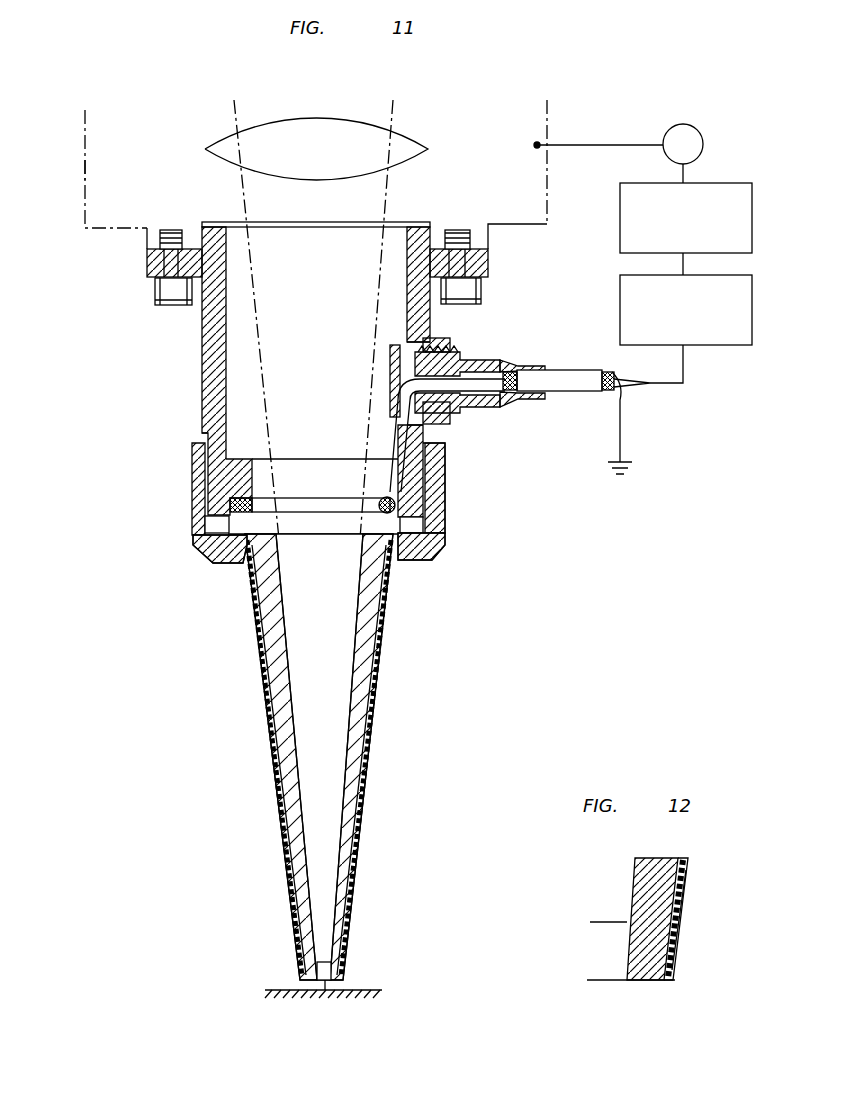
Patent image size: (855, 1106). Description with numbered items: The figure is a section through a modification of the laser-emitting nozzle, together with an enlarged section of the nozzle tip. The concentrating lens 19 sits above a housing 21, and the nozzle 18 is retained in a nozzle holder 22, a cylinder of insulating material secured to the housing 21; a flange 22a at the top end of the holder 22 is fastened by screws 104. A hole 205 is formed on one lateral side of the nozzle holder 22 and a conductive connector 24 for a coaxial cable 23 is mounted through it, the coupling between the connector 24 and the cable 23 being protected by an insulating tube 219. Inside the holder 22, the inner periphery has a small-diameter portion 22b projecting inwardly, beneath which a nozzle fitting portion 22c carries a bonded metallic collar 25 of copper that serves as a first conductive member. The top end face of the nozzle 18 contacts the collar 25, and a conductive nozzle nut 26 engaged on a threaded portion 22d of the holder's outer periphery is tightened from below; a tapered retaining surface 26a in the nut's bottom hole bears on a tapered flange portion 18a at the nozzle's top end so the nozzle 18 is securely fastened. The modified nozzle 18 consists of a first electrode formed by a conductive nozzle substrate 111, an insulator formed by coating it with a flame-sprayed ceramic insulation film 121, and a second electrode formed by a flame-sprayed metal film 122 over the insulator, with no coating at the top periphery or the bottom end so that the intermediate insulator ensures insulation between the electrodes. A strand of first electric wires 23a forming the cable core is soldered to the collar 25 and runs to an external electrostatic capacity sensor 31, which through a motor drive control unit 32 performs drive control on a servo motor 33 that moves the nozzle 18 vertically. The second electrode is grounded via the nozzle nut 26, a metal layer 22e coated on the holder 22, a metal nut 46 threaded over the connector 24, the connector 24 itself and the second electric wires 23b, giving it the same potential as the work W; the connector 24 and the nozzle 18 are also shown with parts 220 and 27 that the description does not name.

In FIG. 11, the concentrating lens 19 is at (292, 117).
In FIG. 11, the housing 21 is at (86, 172).
In FIG. 11, the nozzle holder 22 is at (208, 347).
In FIG. 11, the flange 22a is at (150, 266).
In FIG. 11, the small-diameter portion 22b is at (211, 465).
In FIG. 11, the nozzle fitting portion 22c is at (208, 530).
In FIG. 11, the threaded portion 22d is at (192, 487).
In FIG. 11, the metal layer 22e is at (428, 432).
In FIG. 11, the screws 104 is at (153, 295).
In FIG. 11, the servo motor 33 is at (667, 128).
In FIG. 11, the motor drive control unit 32 is at (620, 210).
In FIG. 11, the electrostatic capacity sensor 31 is at (620, 300).
In FIG. 11, the hole 205 is at (395, 348).
In FIG. 11, the flange plate 220 is at (392, 378).
In FIG. 11, the connector 24 is at (467, 355).
In FIG. 11, the metal nut 46 is at (452, 421).
In FIG. 11, the coaxial cable 23 is at (533, 378).
In FIG. 11, the second electric wires 23b is at (605, 370).
In FIG. 11, the first electric wires 23a is at (386, 497).
In FIG. 11, the insulating tube 219 is at (550, 404).
In FIG. 11, the metallic collar 25 is at (274, 497).
In FIG. 11, the nozzle nut 26 is at (441, 505).
In FIG. 11, the tapered retaining surface 26a is at (405, 562).
In FIG. 11, the tapered flange portion 18a is at (218, 547).
In FIG. 11, the nozzle 18 is at (280, 707).
In FIG. 11, the metal film 122 is at (381, 656).
In FIG. 12, the metal film 122 is at (682, 915).
In FIG. 11, the insulation film 121 is at (374, 720).
In FIG. 12, the insulation film 121 is at (682, 876).
In FIG. 11, the nozzle substrate 111 is at (352, 840).
In FIG. 12, the nozzle substrate 111 is at (645, 885).
In FIG. 11, the nozzle orifice 27 is at (318, 982).
In FIG. 12, the nozzle orifice 27 is at (603, 982).
In FIG. 11, the work W is at (361, 990).